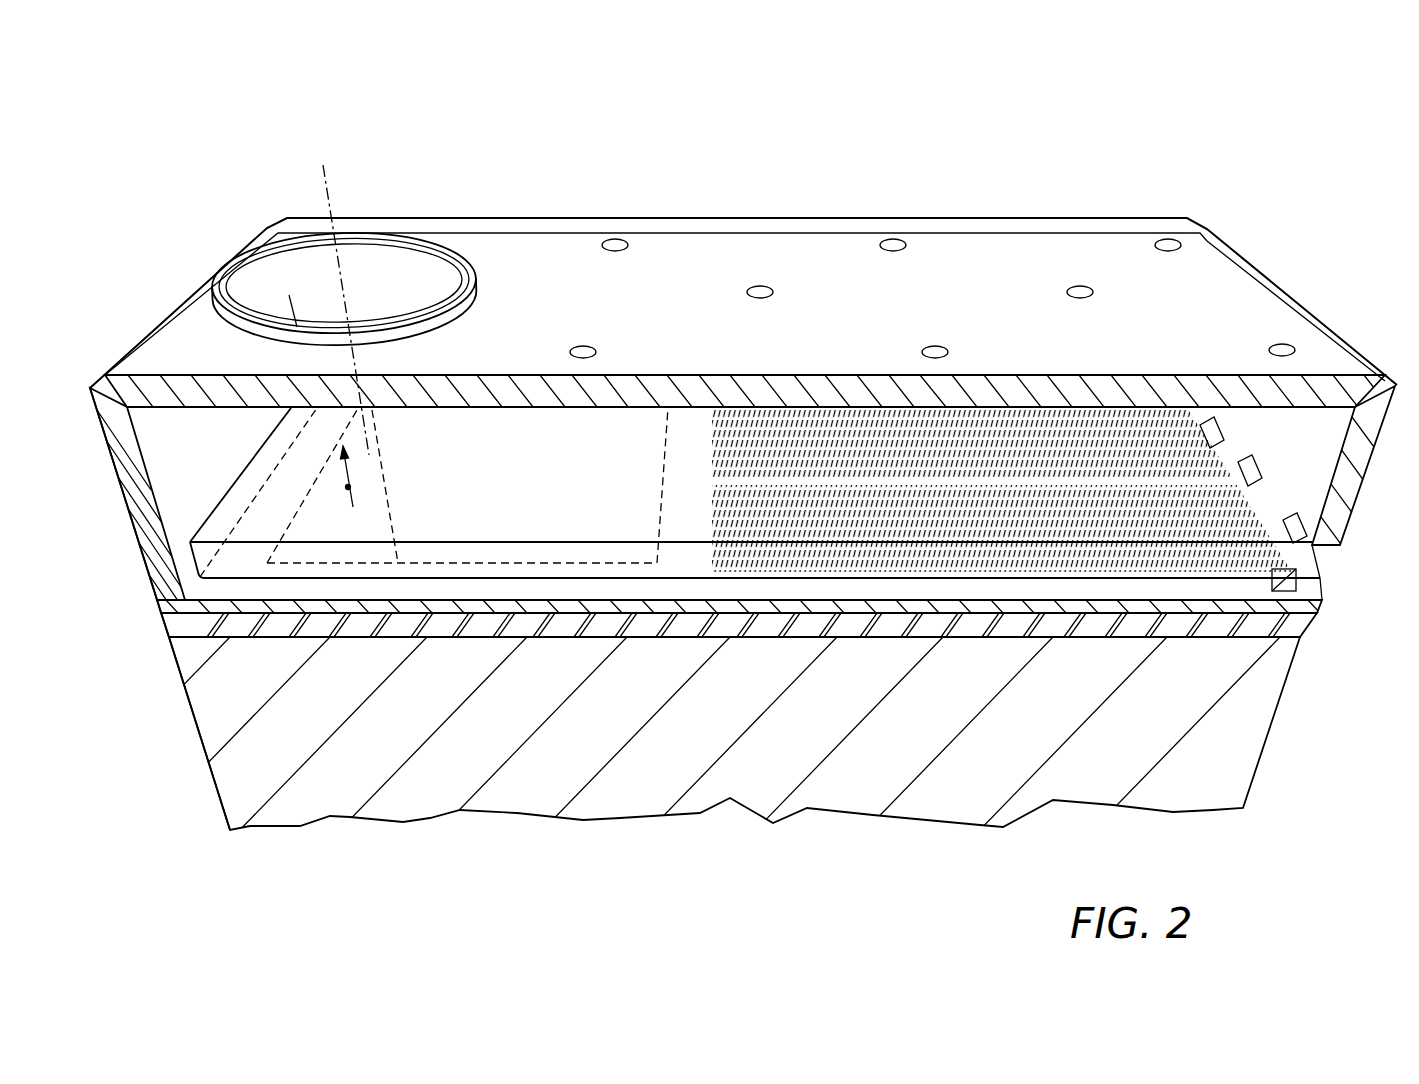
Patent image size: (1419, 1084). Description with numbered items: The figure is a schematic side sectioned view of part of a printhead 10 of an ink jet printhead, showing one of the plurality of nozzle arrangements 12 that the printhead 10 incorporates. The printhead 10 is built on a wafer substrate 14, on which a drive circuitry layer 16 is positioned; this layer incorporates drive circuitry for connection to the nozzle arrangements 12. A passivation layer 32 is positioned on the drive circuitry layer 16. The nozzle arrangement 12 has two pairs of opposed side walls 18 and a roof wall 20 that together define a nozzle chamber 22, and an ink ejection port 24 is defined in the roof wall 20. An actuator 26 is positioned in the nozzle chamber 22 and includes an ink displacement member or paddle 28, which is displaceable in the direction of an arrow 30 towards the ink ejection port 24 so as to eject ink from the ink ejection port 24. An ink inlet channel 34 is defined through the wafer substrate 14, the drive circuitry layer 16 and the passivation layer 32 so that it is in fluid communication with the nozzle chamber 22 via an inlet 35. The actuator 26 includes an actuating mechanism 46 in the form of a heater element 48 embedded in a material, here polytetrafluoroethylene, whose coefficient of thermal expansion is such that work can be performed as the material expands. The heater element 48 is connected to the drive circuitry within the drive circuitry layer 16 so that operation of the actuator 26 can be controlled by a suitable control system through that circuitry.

The printhead 10 is at (727, 503).
The nozzle arrangement 12 is at (753, 412).
The wafer substrate 14 is at (607, 795).
The drive circuitry layer 16 is at (1020, 620).
The side walls 18 is at (145, 502).
The roof wall 20 is at (558, 268).
The nozzle chamber 22 is at (622, 452).
The ink ejection port 24 is at (390, 300).
The actuator 26 is at (230, 590).
The paddle 28 is at (672, 562).
The arrow 30 is at (348, 487).
The passivation layer 32 is at (855, 605).
The ink inlet channel 34 is at (445, 555).
The inlet 35 is at (497, 452).
The actuating mechanism 46 is at (1113, 453).
The heater element 48 is at (1222, 588).